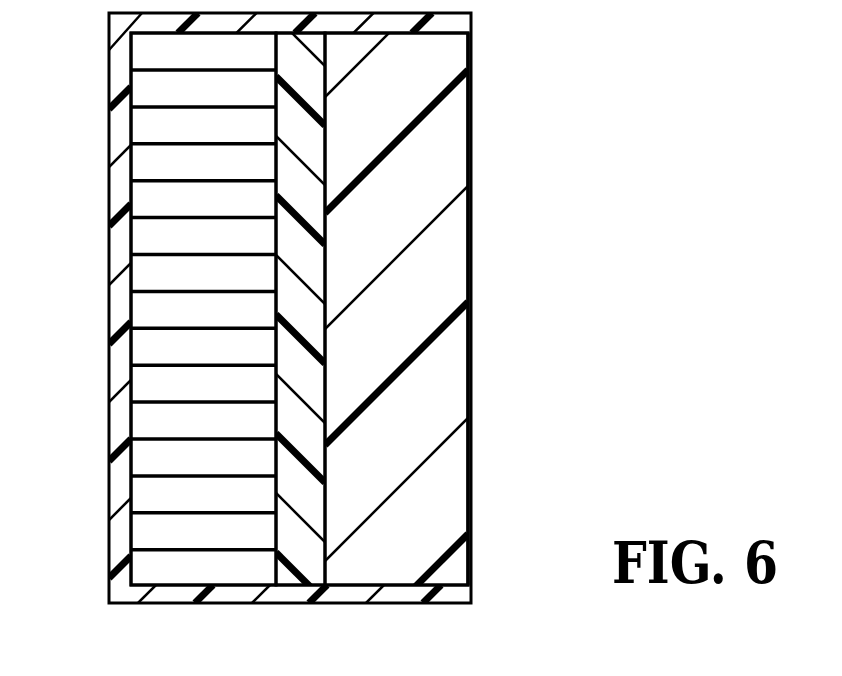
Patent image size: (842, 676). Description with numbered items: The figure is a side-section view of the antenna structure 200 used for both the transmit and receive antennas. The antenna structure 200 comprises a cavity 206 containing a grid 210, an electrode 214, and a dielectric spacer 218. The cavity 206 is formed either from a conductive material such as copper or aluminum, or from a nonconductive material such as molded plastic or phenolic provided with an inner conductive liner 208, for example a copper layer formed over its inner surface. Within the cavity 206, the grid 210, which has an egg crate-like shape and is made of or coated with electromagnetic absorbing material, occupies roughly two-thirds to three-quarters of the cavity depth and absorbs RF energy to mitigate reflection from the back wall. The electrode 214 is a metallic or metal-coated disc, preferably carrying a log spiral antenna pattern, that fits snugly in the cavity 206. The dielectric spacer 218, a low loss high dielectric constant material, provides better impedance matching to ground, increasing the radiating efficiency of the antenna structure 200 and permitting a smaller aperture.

The antenna structure 200 is at (74, 474).
The cavity 206 is at (153, 604).
The inner conductive liner 208 is at (443, 587).
The grid 210 is at (215, 533).
The electrode 214 is at (307, 552).
The dielectric spacer 218 is at (385, 550).